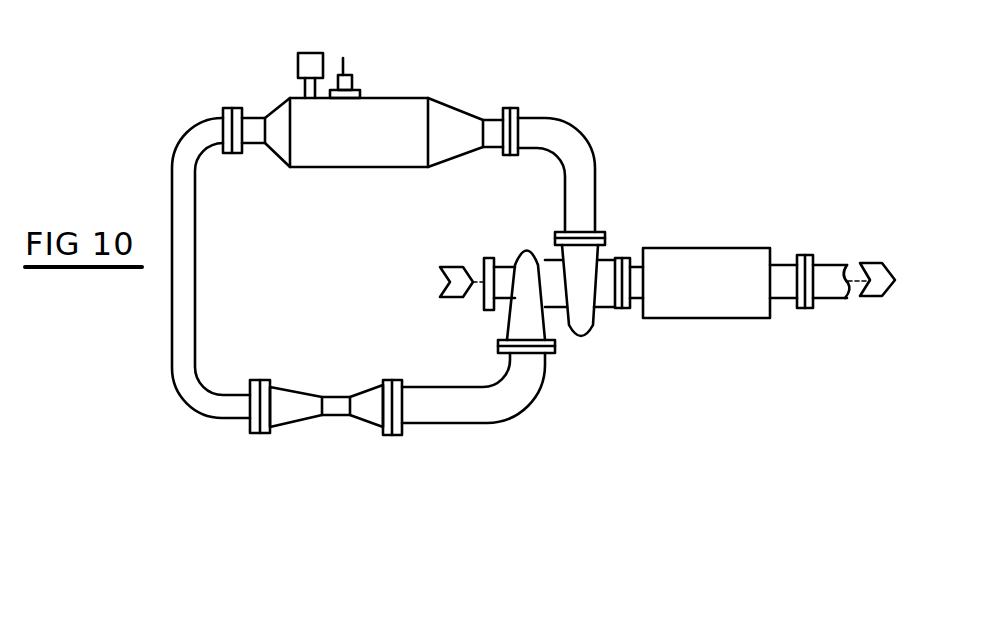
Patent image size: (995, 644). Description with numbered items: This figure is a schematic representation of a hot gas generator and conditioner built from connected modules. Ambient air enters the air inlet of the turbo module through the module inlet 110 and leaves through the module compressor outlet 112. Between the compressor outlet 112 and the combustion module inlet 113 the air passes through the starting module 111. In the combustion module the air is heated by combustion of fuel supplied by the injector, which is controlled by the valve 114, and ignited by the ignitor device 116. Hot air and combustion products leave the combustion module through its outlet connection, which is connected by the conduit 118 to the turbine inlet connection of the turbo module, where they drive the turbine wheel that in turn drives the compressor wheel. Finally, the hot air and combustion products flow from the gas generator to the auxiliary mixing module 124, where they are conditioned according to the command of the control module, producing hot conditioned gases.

The module inlet 110 is at (485, 298).
The starting module 111 is at (367, 424).
The module compressor outlet 112 is at (557, 348).
The combustion module inlet 113 is at (253, 117).
The valve 114 is at (313, 62).
The ignitor device 116 is at (352, 82).
The conduit 118 is at (572, 147).
The auxiliary mixing module 124 is at (737, 305).